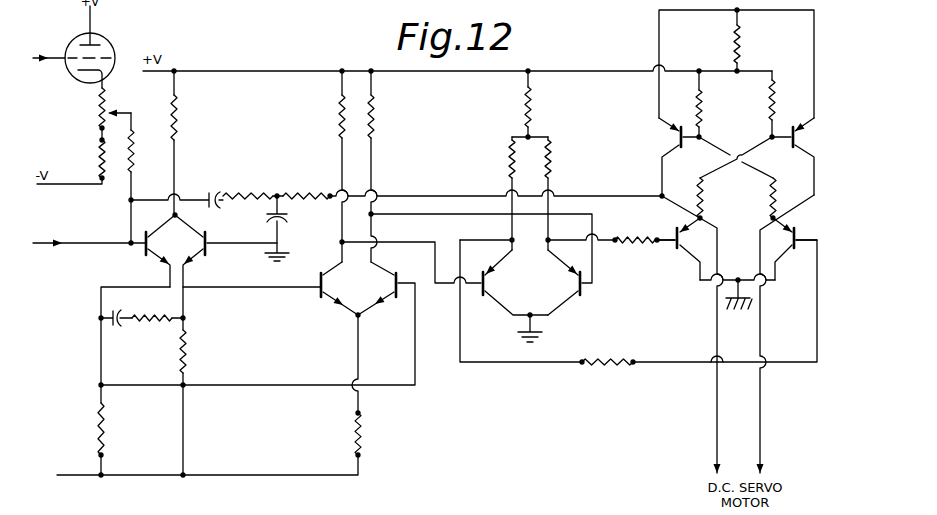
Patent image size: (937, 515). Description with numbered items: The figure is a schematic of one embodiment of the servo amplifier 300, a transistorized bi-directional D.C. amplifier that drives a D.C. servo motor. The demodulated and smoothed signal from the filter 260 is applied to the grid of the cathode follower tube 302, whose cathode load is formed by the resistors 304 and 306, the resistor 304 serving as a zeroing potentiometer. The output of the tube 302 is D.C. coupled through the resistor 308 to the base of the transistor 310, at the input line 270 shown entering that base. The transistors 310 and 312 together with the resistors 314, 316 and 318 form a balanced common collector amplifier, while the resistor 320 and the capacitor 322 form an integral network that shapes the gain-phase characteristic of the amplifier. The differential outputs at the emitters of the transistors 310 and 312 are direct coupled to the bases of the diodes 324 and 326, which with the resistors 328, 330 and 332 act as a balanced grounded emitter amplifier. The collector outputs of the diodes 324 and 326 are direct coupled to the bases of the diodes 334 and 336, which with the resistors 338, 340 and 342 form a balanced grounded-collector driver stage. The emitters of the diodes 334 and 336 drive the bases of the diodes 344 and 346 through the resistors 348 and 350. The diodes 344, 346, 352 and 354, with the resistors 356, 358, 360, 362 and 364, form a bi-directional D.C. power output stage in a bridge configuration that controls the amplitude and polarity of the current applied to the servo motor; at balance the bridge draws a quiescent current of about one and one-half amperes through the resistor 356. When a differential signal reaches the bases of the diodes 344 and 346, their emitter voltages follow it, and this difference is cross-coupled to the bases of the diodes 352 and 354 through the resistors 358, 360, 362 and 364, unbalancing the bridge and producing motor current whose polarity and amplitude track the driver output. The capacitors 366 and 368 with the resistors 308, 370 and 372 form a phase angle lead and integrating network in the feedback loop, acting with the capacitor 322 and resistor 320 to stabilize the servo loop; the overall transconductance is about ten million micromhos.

The filter 260 is at (46, 48).
The cathode follower tube 302 is at (110, 44).
The servo amplifier 300 is at (197, 68).
The resistor 304 is at (97, 108).
The resistor 306 is at (97, 153).
The resistor 308 is at (134, 150).
The resistor 314 is at (178, 118).
The capacitor 366 is at (213, 187).
The resistor 370 is at (246, 192).
The resistor 372 is at (308, 192).
The capacitor 368 is at (284, 218).
The resistor 328 is at (338, 116).
The resistor 330 is at (375, 118).
The input line 270 is at (92, 242).
The transistor 310 is at (144, 262).
The transistor 312 is at (206, 258).
The resistor 320 is at (150, 333).
The capacitor 322 is at (137, 313).
The resistor 318 is at (188, 353).
The resistor 316 is at (97, 437).
The diode 324 is at (316, 295).
The diode 326 is at (400, 300).
The resistor 332 is at (363, 432).
The resistor 340 is at (532, 108).
The resistor 338 is at (508, 158).
The resistor 342 is at (552, 158).
The diode 334 is at (482, 300).
The diode 336 is at (587, 292).
The resistor 348 is at (640, 236).
The resistor 350 is at (602, 368).
The resistor 356 is at (742, 50).
The resistor 358 is at (703, 100).
The resistor 360 is at (768, 106).
The diode 352 is at (672, 142).
The diode 354 is at (796, 149).
The resistor 362 is at (706, 195).
The resistor 364 is at (766, 200).
The diode 344 is at (675, 250).
The diode 346 is at (797, 256).